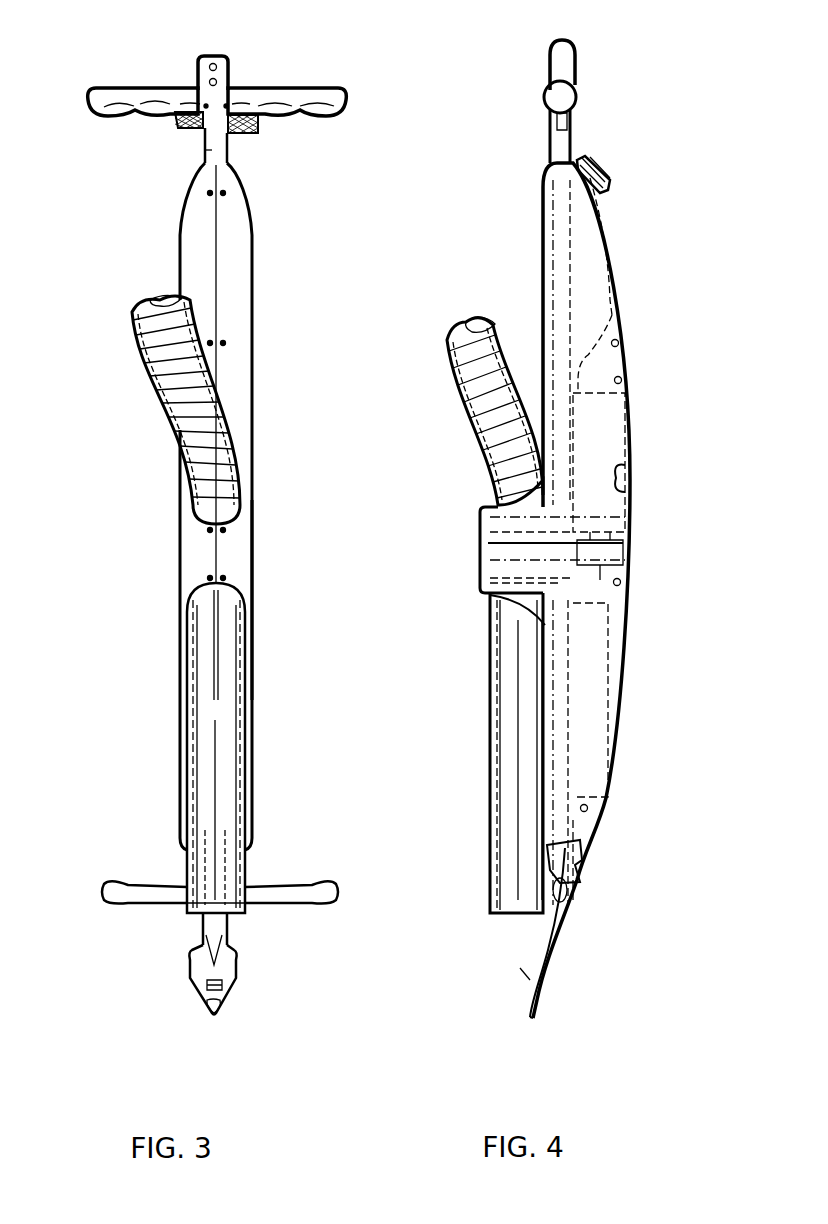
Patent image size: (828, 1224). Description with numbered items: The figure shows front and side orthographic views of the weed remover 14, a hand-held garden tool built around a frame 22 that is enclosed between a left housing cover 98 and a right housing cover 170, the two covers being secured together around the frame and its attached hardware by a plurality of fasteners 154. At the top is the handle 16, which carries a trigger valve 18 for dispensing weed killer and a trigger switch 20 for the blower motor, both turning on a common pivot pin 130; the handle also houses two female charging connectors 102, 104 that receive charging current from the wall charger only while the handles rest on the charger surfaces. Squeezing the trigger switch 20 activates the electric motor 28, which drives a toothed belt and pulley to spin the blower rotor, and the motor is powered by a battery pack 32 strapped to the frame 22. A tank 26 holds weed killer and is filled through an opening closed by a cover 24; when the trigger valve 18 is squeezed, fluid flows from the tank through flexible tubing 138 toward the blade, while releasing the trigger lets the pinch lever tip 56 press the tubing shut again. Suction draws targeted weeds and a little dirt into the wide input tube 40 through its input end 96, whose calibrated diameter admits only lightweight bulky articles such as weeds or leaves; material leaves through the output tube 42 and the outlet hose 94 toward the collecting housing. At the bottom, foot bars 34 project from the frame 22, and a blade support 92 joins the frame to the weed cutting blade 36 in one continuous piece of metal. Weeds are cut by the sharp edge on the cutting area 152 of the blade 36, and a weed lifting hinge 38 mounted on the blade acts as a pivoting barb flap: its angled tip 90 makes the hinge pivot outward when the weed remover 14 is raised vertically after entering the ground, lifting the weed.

In FIG. 3, the weed remover 14 is at (130, 665).
In FIG. 4, the weed remover 14 is at (672, 567).
In FIG. 3, the handle 16 is at (278, 98).
In FIG. 4, the handle 16 is at (550, 92).
In FIG. 3, the trigger valve 18 is at (232, 132).
In FIG. 4, the trigger valve 18 is at (570, 127).
In FIG. 3, the trigger switch 20 is at (180, 130).
In FIG. 3, the frame 22 is at (206, 152).
In FIG. 4, the cover 24 is at (604, 169).
In FIG. 4, the tank 26 is at (612, 300).
In FIG. 4, the electric motor 28 is at (626, 478).
In FIG. 4, the battery pack 32 is at (608, 715).
In FIG. 3, the foot bar 34 is at (122, 907).
In FIG. 3, the weed cutting blade 36 is at (197, 976).
In FIG. 4, the weed lifting hinge 38 is at (522, 983).
In FIG. 3, the input tube 40 is at (198, 864).
In FIG. 4, the input tube 40 is at (512, 695).
In FIG. 3, the output tube 42 is at (162, 353).
In FIG. 4, the pinch lever tip 56 is at (581, 860).
In FIG. 3, the angled tip of hinge 90 is at (235, 968).
In FIG. 4, the angled tip of hinge 90 is at (514, 970).
In FIG. 3, the blade support 92 is at (207, 928).
In FIG. 4, the outlet hose 94 is at (462, 330).
In FIG. 4, the input end of input tube 96 is at (507, 914).
In FIG. 3, the left housing cover 98 is at (192, 565).
In FIG. 3, the female charging connector 102 is at (214, 56).
In FIG. 3, the female charging connector 104 is at (209, 82).
In FIG. 3, the pivot pin 130 is at (228, 133).
In FIG. 4, the flexible tubing 138 is at (581, 383).
In FIG. 3, the cutting area of blade 152 is at (213, 1016).
In FIG. 4, the fastener 154 is at (619, 343).
In FIG. 3, the right housing cover 170 is at (242, 557).
In FIG. 4, the right housing cover 170 is at (612, 430).